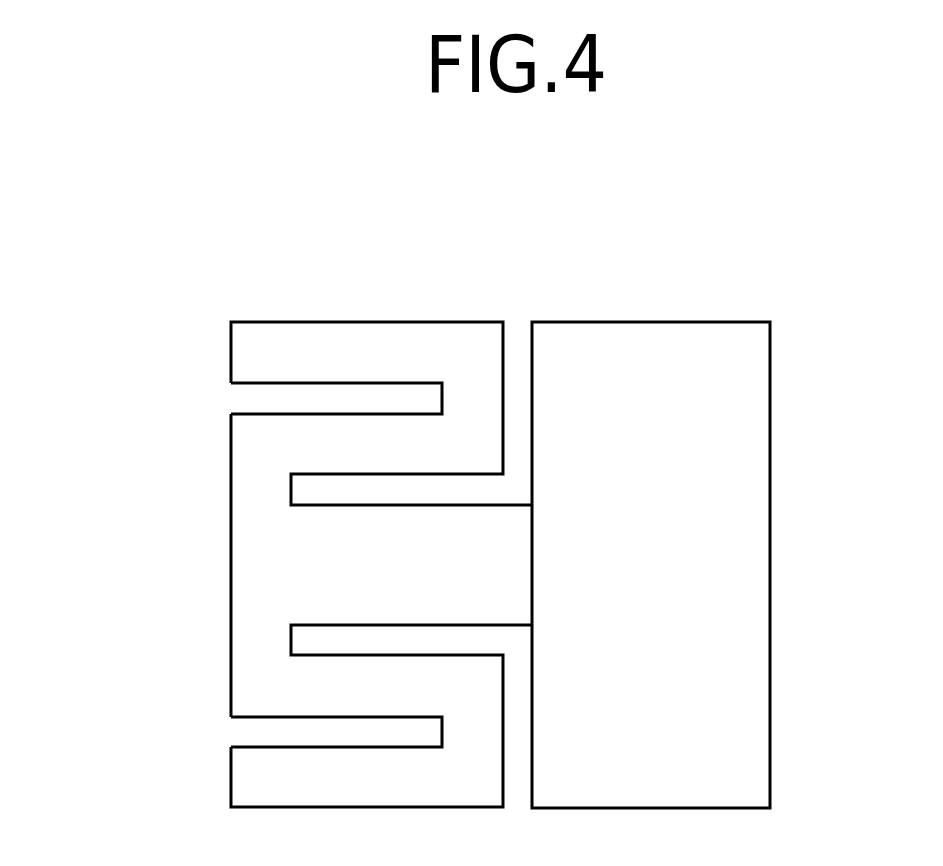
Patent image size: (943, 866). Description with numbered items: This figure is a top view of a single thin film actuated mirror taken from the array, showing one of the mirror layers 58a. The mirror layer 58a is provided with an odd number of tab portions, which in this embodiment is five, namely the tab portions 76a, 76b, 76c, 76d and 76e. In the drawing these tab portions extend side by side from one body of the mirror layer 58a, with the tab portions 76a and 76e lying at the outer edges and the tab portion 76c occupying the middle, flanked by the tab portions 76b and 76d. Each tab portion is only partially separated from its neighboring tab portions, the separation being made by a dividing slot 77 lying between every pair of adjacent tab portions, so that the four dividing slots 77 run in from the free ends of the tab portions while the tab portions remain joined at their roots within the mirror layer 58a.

The mirror layer 58a is at (712, 257).
The tab portion 76a is at (318, 777).
The tab portion 76b is at (272, 693).
The tab portion 76c is at (408, 547).
The tab portion 76d is at (337, 446).
The tab portion 76e is at (320, 348).
The dividing slot 77 is at (260, 398).